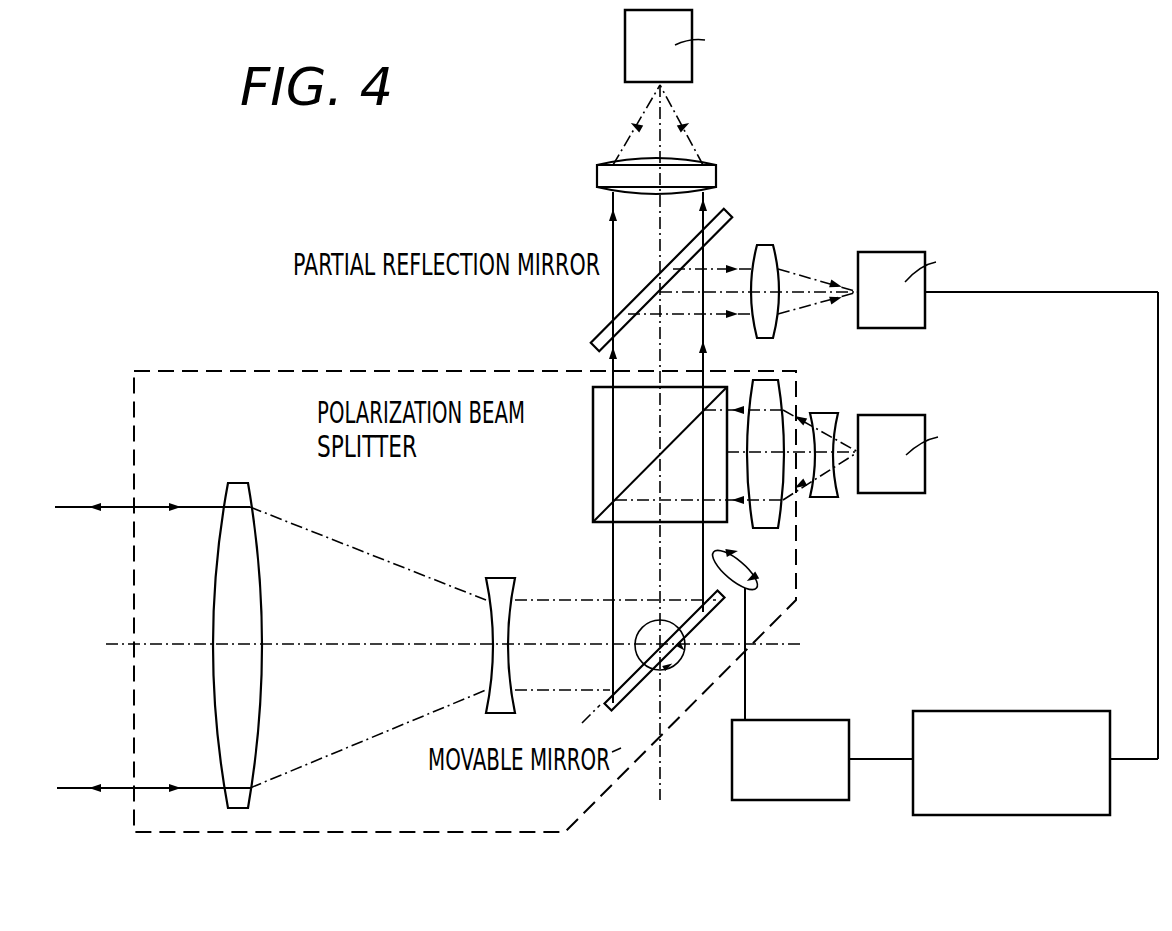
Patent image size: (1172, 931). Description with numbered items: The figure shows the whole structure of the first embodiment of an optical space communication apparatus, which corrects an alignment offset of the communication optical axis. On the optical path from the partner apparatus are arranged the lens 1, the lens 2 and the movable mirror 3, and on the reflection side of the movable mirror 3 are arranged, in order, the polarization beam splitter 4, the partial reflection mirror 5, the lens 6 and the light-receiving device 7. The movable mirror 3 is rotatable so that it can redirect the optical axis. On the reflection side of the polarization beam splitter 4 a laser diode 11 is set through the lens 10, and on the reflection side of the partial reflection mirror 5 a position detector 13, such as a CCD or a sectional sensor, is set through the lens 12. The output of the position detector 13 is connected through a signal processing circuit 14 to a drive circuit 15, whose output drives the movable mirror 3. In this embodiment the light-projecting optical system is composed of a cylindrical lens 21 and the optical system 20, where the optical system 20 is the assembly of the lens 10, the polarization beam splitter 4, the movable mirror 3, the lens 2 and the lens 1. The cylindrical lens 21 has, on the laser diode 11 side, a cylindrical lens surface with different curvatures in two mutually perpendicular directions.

The lens 1 is at (238, 483).
The lens 2 is at (497, 578).
The movable mirror 3 is at (622, 700).
The polarization beam splitter 4 is at (593, 438).
The partial reflection mirror 5 is at (594, 342).
The lens 6 is at (597, 177).
The light-receiving device 7 is at (625, 62).
The lens 10 is at (770, 527).
The laser diode 11 is at (914, 415).
The lens 12 is at (766, 245).
The position detector 13 is at (909, 252).
The signal processing circuit 14 is at (1068, 711).
The drive circuit 15 is at (832, 720).
The optical system 20 is at (335, 371).
The cylindrical lens 21 is at (830, 413).